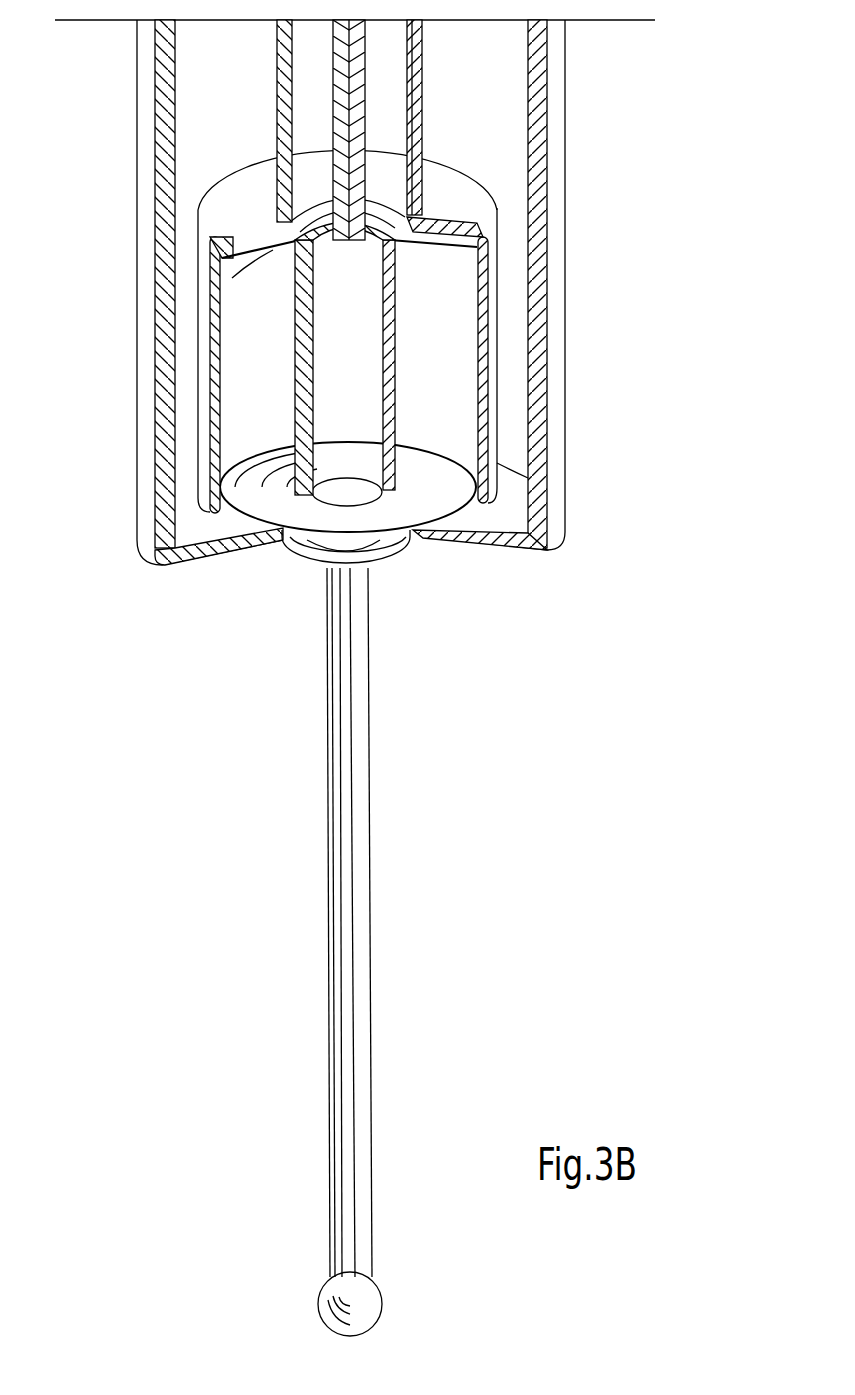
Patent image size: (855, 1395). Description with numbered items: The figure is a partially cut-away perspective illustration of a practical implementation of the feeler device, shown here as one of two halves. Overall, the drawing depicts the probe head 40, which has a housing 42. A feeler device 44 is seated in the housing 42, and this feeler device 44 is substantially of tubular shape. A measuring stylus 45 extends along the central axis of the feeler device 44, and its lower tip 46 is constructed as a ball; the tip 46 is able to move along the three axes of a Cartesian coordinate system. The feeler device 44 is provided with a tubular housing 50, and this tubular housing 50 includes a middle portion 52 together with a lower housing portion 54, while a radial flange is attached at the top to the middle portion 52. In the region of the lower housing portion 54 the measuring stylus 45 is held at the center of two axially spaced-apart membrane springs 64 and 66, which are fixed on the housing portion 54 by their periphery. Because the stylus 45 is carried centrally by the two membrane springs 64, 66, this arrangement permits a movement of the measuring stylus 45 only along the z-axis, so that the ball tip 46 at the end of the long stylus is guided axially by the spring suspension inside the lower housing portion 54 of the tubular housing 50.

The probe head 40 is at (361, 678).
The housing 42 is at (558, 308).
The feeler device 44 is at (373, 743).
The measuring stylus 45 is at (355, 135).
The tip 46 is at (370, 1293).
The tubular housing 50 is at (422, 103).
The middle portion 52 is at (287, 130).
The lower housing portion 54 is at (203, 363).
The membrane spring 64 is at (232, 278).
The membrane spring 66 is at (258, 507).